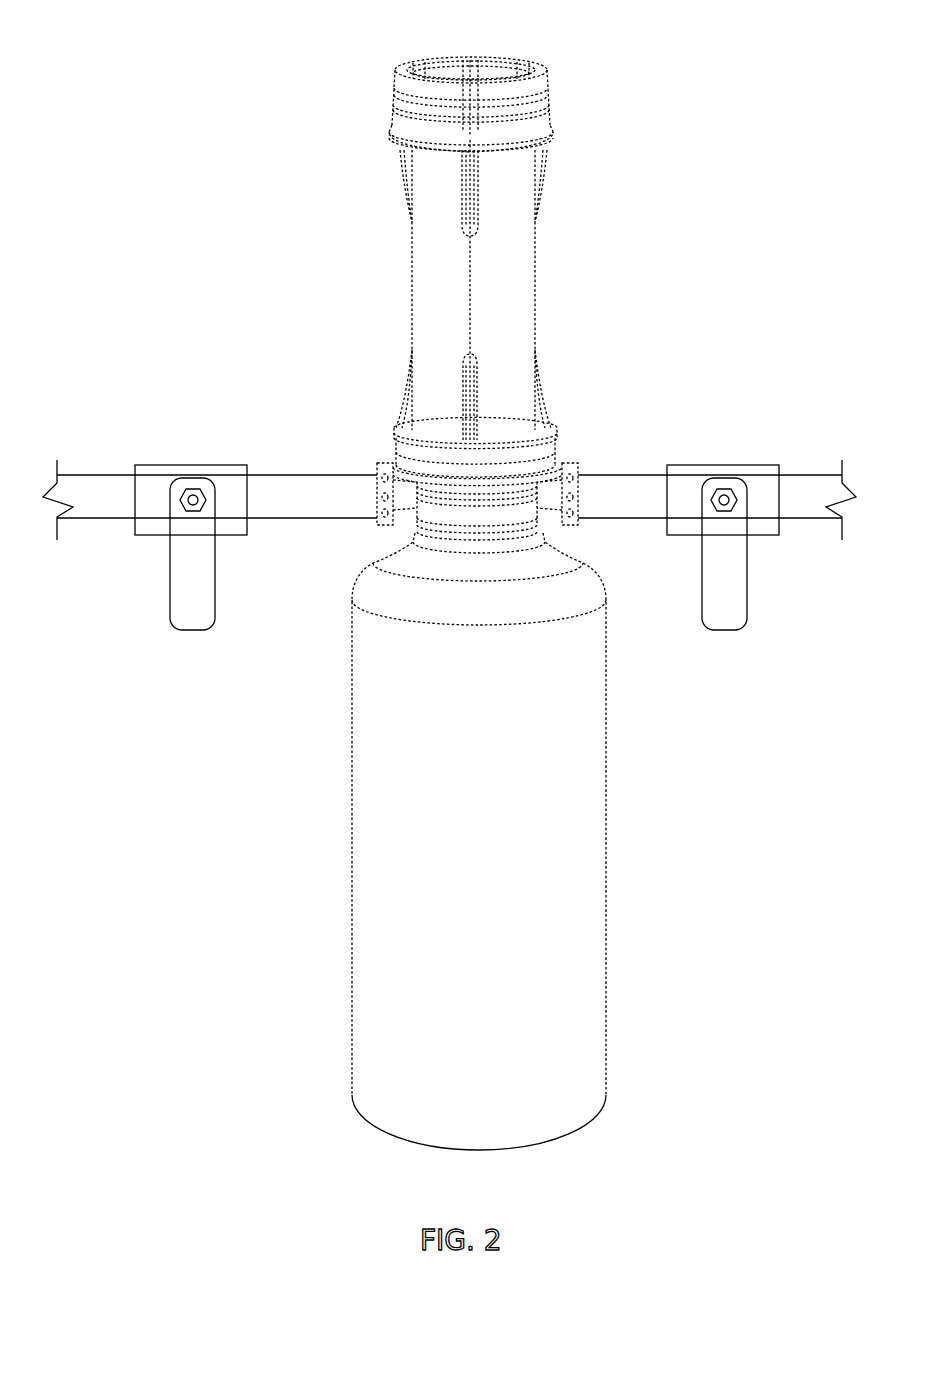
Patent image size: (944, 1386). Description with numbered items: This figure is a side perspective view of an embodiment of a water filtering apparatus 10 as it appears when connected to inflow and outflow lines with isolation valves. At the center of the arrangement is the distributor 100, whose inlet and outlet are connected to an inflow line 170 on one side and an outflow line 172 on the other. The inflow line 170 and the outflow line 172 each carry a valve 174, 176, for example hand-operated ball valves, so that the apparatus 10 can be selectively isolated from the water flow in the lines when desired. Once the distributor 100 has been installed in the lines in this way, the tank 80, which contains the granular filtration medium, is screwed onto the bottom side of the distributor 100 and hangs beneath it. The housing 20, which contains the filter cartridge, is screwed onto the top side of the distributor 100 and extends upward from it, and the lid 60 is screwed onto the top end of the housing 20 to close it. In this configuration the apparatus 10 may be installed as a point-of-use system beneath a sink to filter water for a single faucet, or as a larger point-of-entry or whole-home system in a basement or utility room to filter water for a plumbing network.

The apparatus 10 is at (236, 177).
The housing 20 is at (408, 268).
The lid 60 is at (400, 98).
The tank 80 is at (352, 840).
The distributor 100 is at (397, 440).
The inflow line 170 is at (90, 473).
The outflow line 172 is at (817, 473).
The valve 174 is at (180, 464).
The valve 176 is at (717, 465).